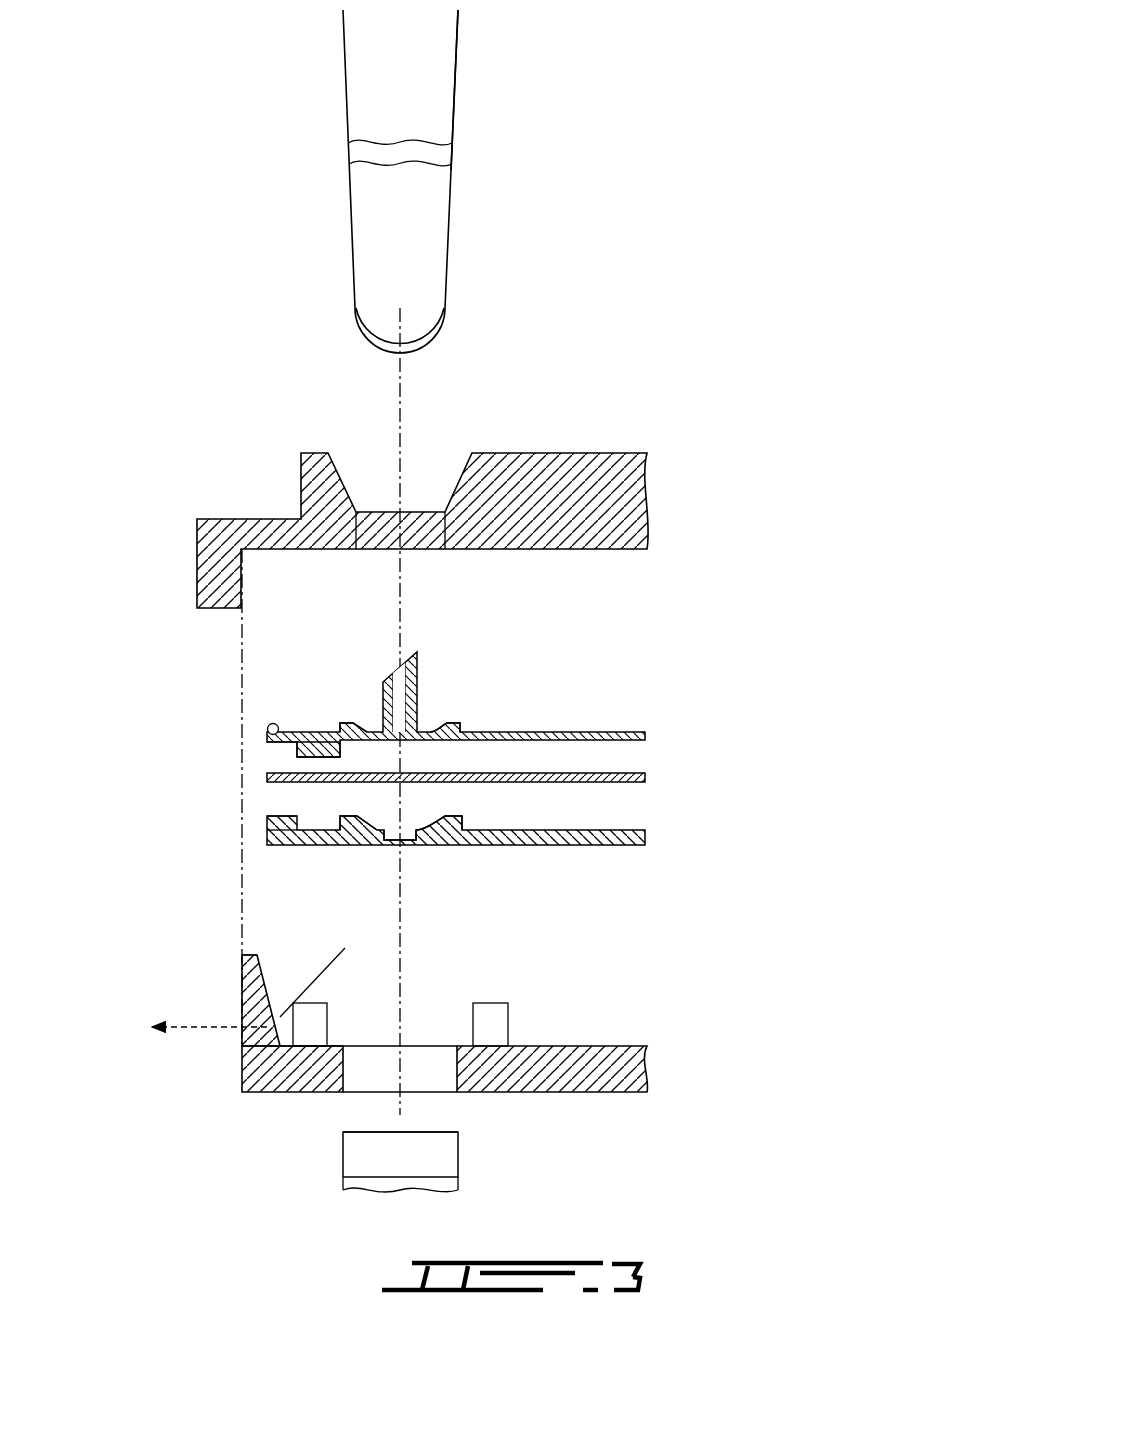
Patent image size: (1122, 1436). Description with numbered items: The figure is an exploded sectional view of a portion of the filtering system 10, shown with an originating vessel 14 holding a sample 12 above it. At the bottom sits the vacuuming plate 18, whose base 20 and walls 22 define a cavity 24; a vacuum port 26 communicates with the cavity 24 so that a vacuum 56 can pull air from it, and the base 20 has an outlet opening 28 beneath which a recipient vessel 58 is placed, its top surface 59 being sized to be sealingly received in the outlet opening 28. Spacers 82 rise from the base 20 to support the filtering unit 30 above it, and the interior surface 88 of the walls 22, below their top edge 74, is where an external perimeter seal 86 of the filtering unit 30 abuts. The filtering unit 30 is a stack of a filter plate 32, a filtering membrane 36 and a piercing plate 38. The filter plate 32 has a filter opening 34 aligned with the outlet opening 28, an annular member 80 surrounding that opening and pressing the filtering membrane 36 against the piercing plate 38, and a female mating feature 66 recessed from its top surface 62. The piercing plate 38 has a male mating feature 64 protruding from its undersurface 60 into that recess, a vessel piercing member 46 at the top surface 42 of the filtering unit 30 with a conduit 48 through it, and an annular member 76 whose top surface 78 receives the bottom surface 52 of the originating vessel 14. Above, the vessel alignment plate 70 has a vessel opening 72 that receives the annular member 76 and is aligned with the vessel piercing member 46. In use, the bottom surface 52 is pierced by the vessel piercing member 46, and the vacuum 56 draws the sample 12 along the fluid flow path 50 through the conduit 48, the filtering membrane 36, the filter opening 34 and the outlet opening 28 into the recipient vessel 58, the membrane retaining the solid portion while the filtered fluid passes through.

The filtering system 10 is at (832, 460).
The sample 12 is at (418, 235).
The originating vessel 14 is at (456, 70).
The vacuuming plate 18 is at (654, 1050).
The base 20 is at (590, 1062).
The walls 22 is at (260, 1070).
The cavity 24 is at (340, 1045).
The vacuum port 26 is at (255, 1022).
The outlet openings 28 is at (425, 1055).
The filtering unit 30 is at (656, 700).
The filter plate 32 is at (650, 834).
The filter openings 34 is at (411, 848).
The filtering membrane 36 is at (652, 775).
The piercing plate 38 is at (652, 735).
The top surface 42 is at (300, 733).
The vessel piercing members 46 is at (418, 678).
The conduit 48 is at (383, 678).
The fluid flow path 50 is at (400, 430).
The bottom surface 52 is at (427, 345).
The vacuum 56 is at (198, 1027).
The recipient vessel 58 is at (458, 1152).
The top surface 59 is at (343, 1133).
The undersurface 60 is at (296, 746).
The top surface 62 is at (282, 816).
The male mating features 64 is at (298, 758).
The female mating features 66 is at (330, 828).
The vessel alignment plate 70 is at (664, 480).
The vessel openings 72 is at (382, 527).
The top edge 74 is at (242, 952).
The annular members 76 is at (450, 722).
The top surface 78 is at (363, 728).
The annular members 80 is at (445, 817).
The spacers 82 is at (308, 1003).
The external perimeter seal 86 is at (268, 726).
The interior surface 88 is at (267, 993).